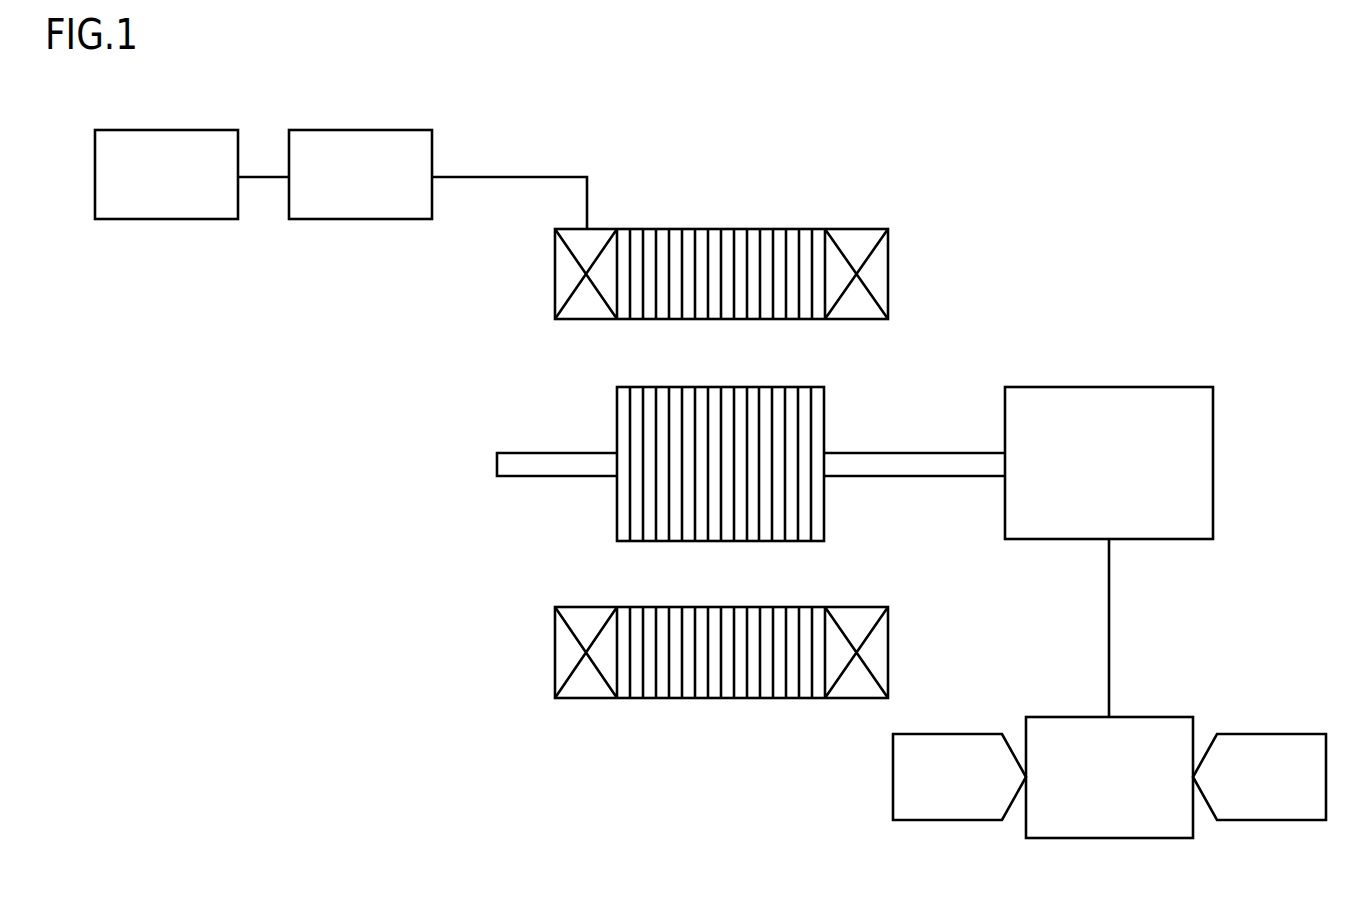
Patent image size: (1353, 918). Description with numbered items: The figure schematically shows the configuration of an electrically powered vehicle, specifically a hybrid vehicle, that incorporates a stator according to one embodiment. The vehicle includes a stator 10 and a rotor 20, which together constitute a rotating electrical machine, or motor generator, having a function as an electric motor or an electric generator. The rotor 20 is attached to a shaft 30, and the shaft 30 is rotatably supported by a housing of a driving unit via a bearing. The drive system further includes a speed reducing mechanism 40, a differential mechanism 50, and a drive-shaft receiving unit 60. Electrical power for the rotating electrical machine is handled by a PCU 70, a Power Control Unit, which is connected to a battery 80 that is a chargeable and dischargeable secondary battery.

The stator 10 is at (798, 201).
The rotor 20 is at (824, 410).
The shaft 30 is at (948, 451).
The speed reducing mechanism 40 is at (1213, 463).
The differential mechanism 50 is at (1108, 840).
The drive-shaft receiving unit 60 is at (1257, 822).
The PCU (Power Control Unit) 70 is at (360, 221).
The battery 80 is at (167, 221).